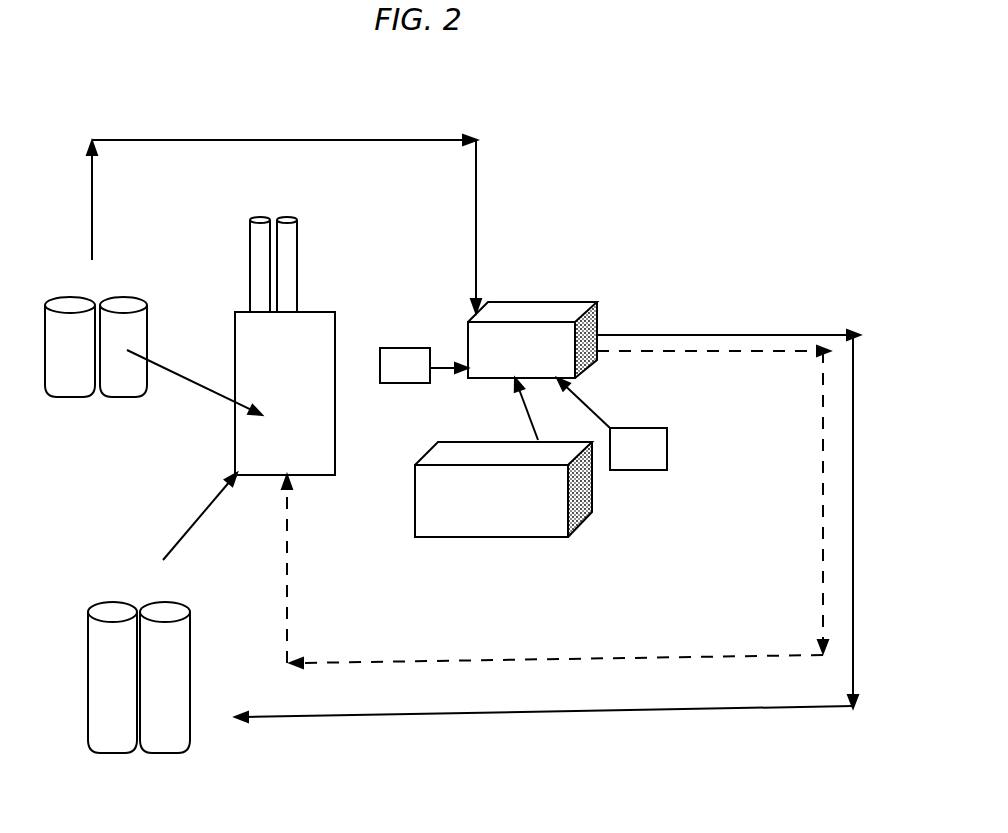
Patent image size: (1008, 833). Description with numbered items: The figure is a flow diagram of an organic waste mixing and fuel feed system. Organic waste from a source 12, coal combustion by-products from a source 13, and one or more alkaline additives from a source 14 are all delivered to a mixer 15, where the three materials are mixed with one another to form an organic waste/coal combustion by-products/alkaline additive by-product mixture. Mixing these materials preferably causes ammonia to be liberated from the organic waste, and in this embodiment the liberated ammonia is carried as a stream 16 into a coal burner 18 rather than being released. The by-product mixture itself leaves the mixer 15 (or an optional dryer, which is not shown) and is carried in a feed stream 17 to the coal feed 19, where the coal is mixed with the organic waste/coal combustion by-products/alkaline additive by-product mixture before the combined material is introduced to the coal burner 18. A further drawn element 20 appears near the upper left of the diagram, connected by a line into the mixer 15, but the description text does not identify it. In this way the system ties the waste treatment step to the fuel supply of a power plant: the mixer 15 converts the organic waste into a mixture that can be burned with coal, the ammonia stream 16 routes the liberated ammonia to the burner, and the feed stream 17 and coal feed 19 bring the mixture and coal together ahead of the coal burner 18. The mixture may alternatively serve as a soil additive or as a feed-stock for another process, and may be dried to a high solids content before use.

The organic waste source 12 is at (503, 457).
The coal combustion by-products source 13 is at (424, 365).
The alkaline additive source 14 is at (612, 424).
The mixer 15 is at (532, 340).
The ammonia stream 16 is at (556, 507).
The feed stream 17 is at (547, 542).
The coal burner 18 is at (285, 346).
The coal feed 19 is at (162, 613).
The gas cylinders 20 is at (153, 338).